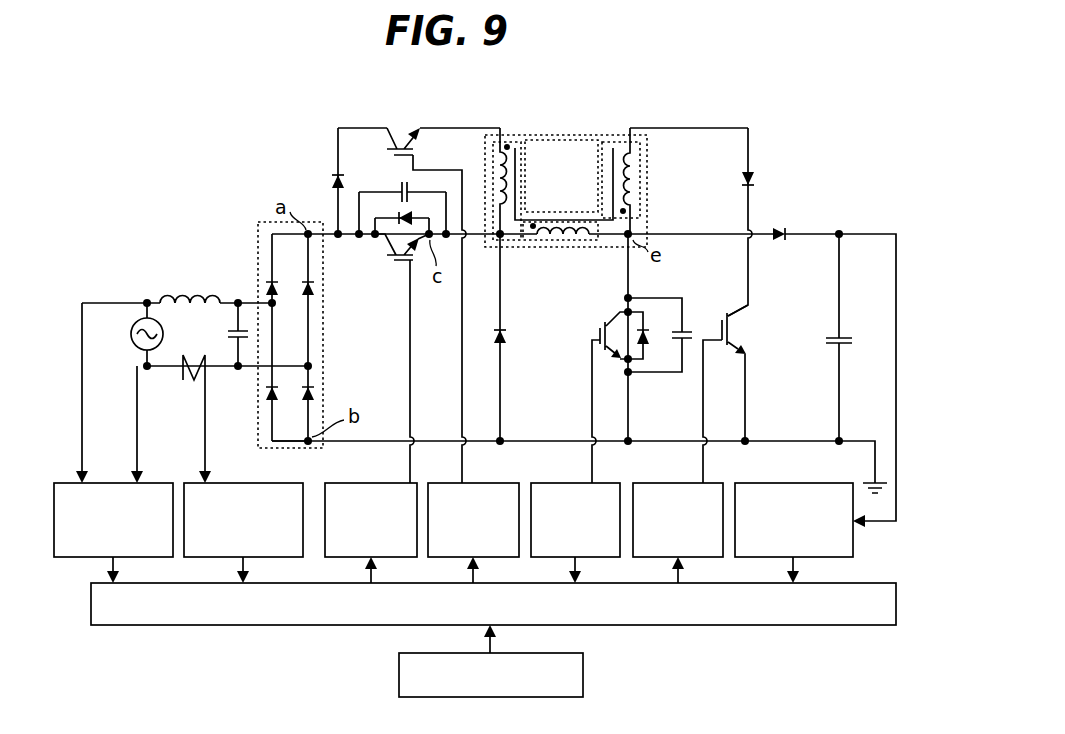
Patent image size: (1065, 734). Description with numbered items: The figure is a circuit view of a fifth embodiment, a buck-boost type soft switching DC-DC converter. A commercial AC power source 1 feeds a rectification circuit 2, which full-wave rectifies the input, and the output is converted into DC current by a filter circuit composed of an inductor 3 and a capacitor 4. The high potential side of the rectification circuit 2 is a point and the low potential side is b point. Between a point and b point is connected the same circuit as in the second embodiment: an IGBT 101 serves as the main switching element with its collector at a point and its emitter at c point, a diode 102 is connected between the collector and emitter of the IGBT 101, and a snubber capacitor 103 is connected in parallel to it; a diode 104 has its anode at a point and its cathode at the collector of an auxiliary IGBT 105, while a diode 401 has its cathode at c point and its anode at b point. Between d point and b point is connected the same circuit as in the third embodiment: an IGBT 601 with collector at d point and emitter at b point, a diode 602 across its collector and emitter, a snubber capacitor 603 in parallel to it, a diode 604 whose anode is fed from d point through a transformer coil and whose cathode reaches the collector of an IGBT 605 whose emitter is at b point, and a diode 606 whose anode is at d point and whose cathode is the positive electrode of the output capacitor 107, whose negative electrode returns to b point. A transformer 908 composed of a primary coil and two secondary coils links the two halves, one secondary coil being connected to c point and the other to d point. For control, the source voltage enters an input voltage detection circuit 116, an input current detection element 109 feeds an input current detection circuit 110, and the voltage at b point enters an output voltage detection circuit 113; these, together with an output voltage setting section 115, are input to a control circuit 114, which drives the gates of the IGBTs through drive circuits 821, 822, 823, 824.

The commercial AC power source 1 is at (131, 334).
The rectification circuit 2 is at (258, 237).
The inductor 3 is at (200, 298).
The capacitor 4 is at (226, 334).
The IGBT 101 is at (400, 270).
The diode 102 is at (398, 212).
The snubber capacitor 103 is at (400, 184).
The diode 104 is at (334, 177).
The IGBT 105 is at (423, 147).
The capacitor 107 is at (848, 333).
The input current detection element 109 is at (188, 384).
The input current detection circuit 110 is at (256, 482).
The output voltage detection circuit 113 is at (801, 484).
The control circuit 114 is at (846, 584).
The output voltage setting section 115 is at (586, 671).
The input voltage detection circuit 116 is at (74, 560).
The diode 401 is at (505, 328).
The IGBT 601 is at (598, 332).
The diode 602 is at (648, 322).
The snubber capacitor 603 is at (690, 322).
The diode 604 is at (752, 175).
The IGBT 605 is at (742, 328).
The diode 606 is at (789, 229).
The drive circuit 821 is at (345, 482).
The drive circuit 822 is at (483, 482).
The drive circuit 823 is at (543, 482).
The drive circuit 824 is at (648, 482).
The transformer 908 is at (507, 134).